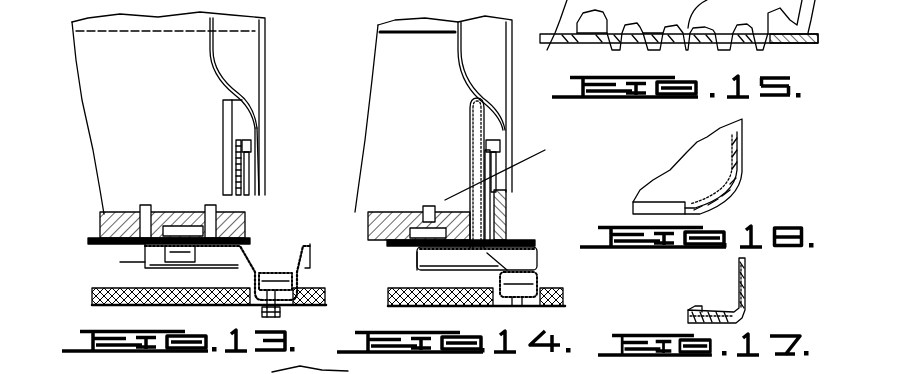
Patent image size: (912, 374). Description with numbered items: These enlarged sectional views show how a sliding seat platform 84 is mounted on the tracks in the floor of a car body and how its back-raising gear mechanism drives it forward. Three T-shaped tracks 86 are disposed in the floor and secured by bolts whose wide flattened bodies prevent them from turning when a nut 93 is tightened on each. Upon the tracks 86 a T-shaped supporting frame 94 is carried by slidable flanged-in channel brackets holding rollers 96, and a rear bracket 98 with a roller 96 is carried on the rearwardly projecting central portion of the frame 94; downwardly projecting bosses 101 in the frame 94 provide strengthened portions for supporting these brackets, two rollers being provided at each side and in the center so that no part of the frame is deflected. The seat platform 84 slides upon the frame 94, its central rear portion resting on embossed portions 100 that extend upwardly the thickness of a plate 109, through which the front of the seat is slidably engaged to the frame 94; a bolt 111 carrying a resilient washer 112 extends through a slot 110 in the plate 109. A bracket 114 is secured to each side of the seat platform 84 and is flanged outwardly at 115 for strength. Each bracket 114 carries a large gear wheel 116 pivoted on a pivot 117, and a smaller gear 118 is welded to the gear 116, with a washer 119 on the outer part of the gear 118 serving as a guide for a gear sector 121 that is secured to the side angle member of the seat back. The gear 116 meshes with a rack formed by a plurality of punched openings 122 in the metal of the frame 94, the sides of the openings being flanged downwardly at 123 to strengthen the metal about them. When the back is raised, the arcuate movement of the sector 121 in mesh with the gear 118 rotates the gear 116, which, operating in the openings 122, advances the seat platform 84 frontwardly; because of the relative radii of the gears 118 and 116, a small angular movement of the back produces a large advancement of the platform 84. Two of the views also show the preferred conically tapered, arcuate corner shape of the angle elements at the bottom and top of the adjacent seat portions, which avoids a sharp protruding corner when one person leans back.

In FIG. 14, the seat platform 84 is at (372, 216).
In FIG. 13, the track 86 is at (282, 308).
In FIG. 14, the track 86 is at (546, 308).
In FIG. 13, the nut 93 is at (258, 281).
In FIG. 15, the supporting frame 94 is at (568, 44).
In FIG. 13, the roller 96 is at (299, 278).
In FIG. 14, the roller 96 is at (537, 288).
In FIG. 14, the rear bracket 98 is at (500, 278).
In FIG. 14, the embossed portion 100 is at (514, 244).
In FIG. 13, the boss 101 is at (303, 256).
In FIG. 14, the boss 101 is at (538, 268).
In FIG. 13, the plate 109 is at (100, 243).
In FIG. 14, the plate 109 is at (405, 214).
In FIG. 13, the slot 110 is at (165, 210).
In FIG. 14, the slot 110 is at (417, 258).
In FIG. 13, the bolt 111 is at (196, 262).
In FIG. 13, the resilient washer 112 is at (145, 266).
In FIG. 13, the bracket 114 is at (224, 100).
In FIG. 13, the outward flange 115 is at (205, 190).
In FIG. 14, the outward flange 115 is at (447, 185).
In FIG. 14, the large gear wheel 116 is at (470, 104).
In FIG. 13, the pivot 117 is at (241, 168).
In FIG. 14, the pivot 117 is at (475, 168).
In FIG. 13, the smaller gear 118 is at (249, 140).
In FIG. 14, the smaller gear 118 is at (498, 142).
In FIG. 13, the washer 119 is at (250, 152).
In FIG. 14, the washer 119 is at (532, 166).
In FIG. 14, the gear sector 121 is at (506, 212).
In FIG. 15, the punched opening 122 is at (716, 50).
In FIG. 15, the downward flange 123 is at (583, 50).